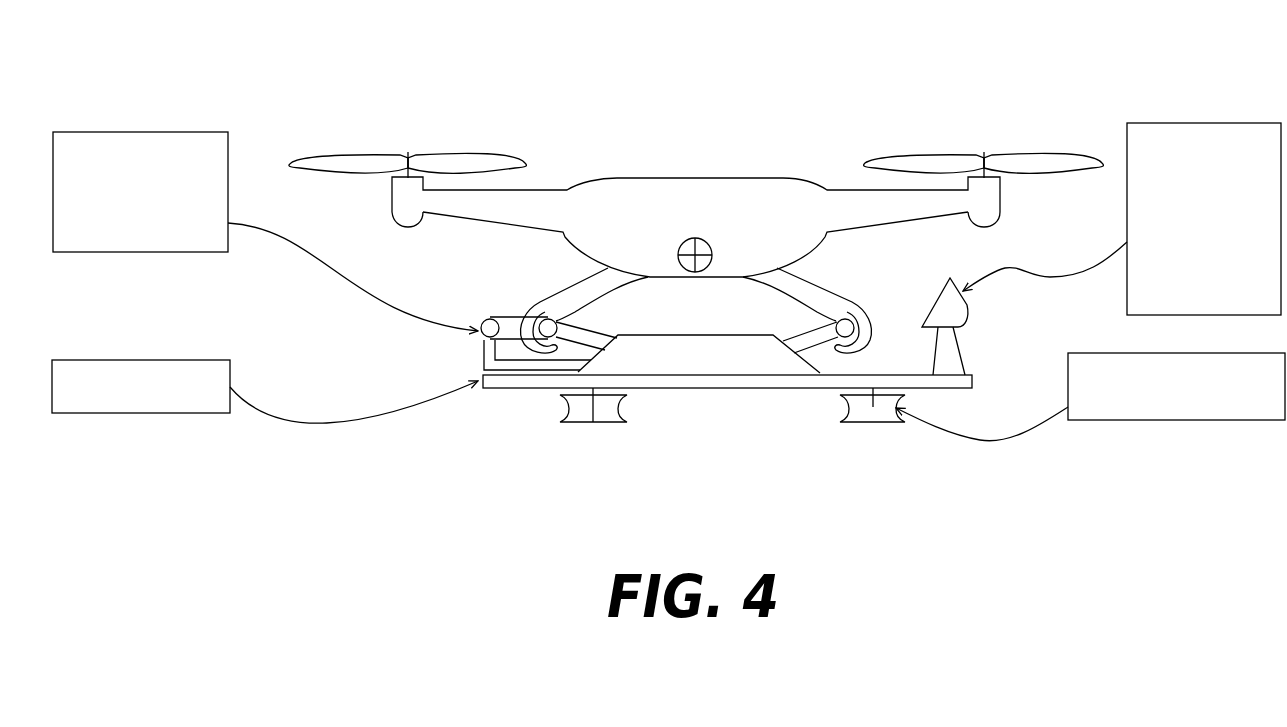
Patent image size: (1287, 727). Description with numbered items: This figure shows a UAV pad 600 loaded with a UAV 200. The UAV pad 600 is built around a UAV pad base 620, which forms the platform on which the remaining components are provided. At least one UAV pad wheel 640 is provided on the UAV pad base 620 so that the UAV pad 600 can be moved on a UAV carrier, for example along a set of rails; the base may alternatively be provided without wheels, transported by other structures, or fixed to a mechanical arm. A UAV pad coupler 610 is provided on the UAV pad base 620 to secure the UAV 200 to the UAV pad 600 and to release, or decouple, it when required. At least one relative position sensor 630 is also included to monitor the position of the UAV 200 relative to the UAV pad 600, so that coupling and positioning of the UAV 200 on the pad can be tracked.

The UAV 200 is at (632, 176).
The UAV pad 600 is at (718, 389).
The UAV pad coupler 610 is at (194, 132).
The UAV pad base 620 is at (195, 360).
The relative position sensor 630 is at (1147, 123).
The UAV pad wheel 640 is at (1163, 422).